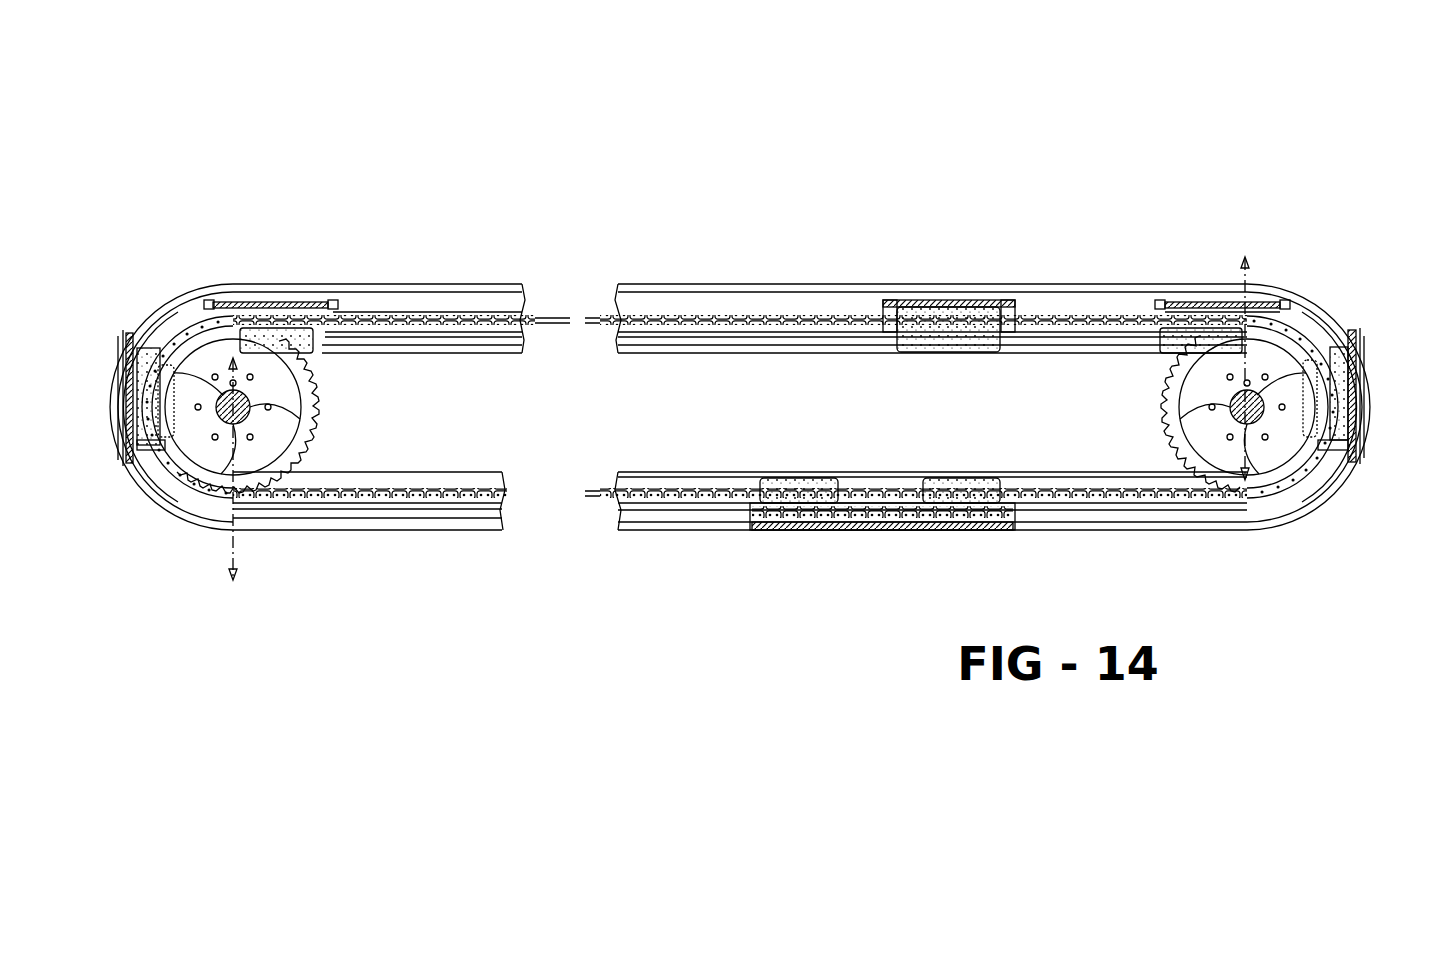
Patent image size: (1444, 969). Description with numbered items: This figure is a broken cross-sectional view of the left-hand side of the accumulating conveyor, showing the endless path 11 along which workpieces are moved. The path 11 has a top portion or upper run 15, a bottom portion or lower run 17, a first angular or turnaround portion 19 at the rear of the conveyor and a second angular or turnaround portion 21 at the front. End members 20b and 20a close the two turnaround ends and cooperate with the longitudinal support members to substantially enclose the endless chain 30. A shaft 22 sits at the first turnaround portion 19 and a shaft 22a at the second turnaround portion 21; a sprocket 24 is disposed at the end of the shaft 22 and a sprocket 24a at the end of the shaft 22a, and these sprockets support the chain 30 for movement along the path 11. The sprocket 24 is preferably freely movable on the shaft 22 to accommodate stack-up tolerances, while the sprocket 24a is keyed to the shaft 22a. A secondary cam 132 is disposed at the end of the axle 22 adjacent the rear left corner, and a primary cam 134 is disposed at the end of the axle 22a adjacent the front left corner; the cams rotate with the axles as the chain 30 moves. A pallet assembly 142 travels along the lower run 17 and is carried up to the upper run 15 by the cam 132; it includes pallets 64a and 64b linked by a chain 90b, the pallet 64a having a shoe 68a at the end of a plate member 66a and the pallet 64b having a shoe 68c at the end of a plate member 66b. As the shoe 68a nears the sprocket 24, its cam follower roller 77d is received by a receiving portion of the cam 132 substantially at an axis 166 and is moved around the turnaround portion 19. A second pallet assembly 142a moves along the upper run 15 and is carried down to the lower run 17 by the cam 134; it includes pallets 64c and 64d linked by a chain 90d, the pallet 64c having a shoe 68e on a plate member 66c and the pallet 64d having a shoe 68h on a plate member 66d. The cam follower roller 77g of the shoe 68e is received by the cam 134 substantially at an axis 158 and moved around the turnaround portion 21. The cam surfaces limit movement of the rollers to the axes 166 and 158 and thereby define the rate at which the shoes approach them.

The path 11 is at (722, 252).
The top portion 15 is at (938, 228).
The bottom portion 17 is at (688, 592).
The first angular portion 19 is at (140, 288).
The second angular portion 21 is at (1310, 240).
The end member 20a is at (1370, 400).
The end member 20b is at (163, 512).
The shaft 22 is at (300, 418).
The shaft 22a is at (1162, 408).
The sprocket 24 is at (305, 388).
The sprocket 24a is at (1165, 430).
The chain 30 is at (472, 496).
The pallet 64a is at (272, 275).
The pallet 64b is at (118, 440).
The pallet 64c is at (1357, 340).
The pallet 64d is at (1153, 273).
The plate member 66a is at (300, 300).
The plate member 66b is at (113, 350).
The plate member 66c is at (1368, 440).
The plate member 66d is at (1193, 300).
The shoe 68a is at (358, 326).
The shoe 68c is at (162, 450).
The shoe 68e is at (1322, 465).
The shoe 68h is at (1160, 356).
The cam follower roller 77d is at (282, 356).
The cam follower roller 77g is at (1320, 470).
The chain 90b is at (197, 320).
The chain 90d is at (1310, 318).
The cam 132 is at (280, 445).
The cam 134 is at (1258, 468).
The pallet assembly 142 is at (232, 265).
The pallet assembly 142a is at (1212, 178).
The axis 158 is at (1258, 268).
The axis 166 is at (243, 565).